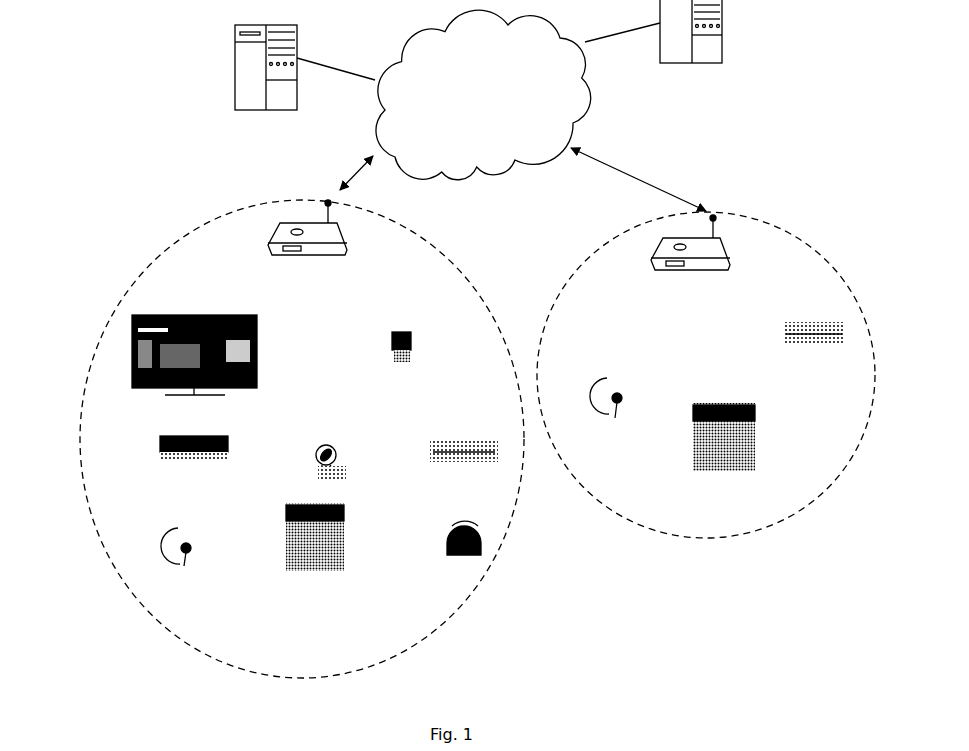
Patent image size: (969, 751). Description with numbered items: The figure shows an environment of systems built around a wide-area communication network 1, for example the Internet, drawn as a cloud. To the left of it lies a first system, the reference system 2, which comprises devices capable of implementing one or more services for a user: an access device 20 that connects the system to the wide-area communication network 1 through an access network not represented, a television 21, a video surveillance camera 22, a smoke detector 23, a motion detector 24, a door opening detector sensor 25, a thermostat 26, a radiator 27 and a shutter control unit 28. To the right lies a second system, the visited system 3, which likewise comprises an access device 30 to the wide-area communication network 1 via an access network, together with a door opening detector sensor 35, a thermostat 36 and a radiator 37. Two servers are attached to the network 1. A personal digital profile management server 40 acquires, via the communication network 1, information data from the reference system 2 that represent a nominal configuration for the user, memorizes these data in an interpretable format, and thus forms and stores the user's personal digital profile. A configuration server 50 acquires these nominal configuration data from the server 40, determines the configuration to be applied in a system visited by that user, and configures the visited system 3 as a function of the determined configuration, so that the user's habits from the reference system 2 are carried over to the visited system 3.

The wide-area communication network 1 is at (491, 176).
The reference system 2 is at (80, 437).
The visited system 3 is at (656, 535).
The access device 20 is at (270, 250).
The television 21 is at (170, 396).
The video surveillance camera 22 is at (400, 360).
The smoke detector 23 is at (178, 458).
The motion detector 24 is at (318, 470).
The door opening detector sensor 25 is at (462, 462).
The thermostat 26 is at (182, 562).
The radiator 27 is at (294, 572).
The shutter control unit 28 is at (456, 555).
The access device 30 is at (653, 265).
The door opening detector sensor 35 is at (815, 348).
The thermostat 36 is at (615, 412).
The radiator 37 is at (703, 470).
The personal digital profile management server 40 is at (258, 110).
The configuration server 50 is at (684, 63).